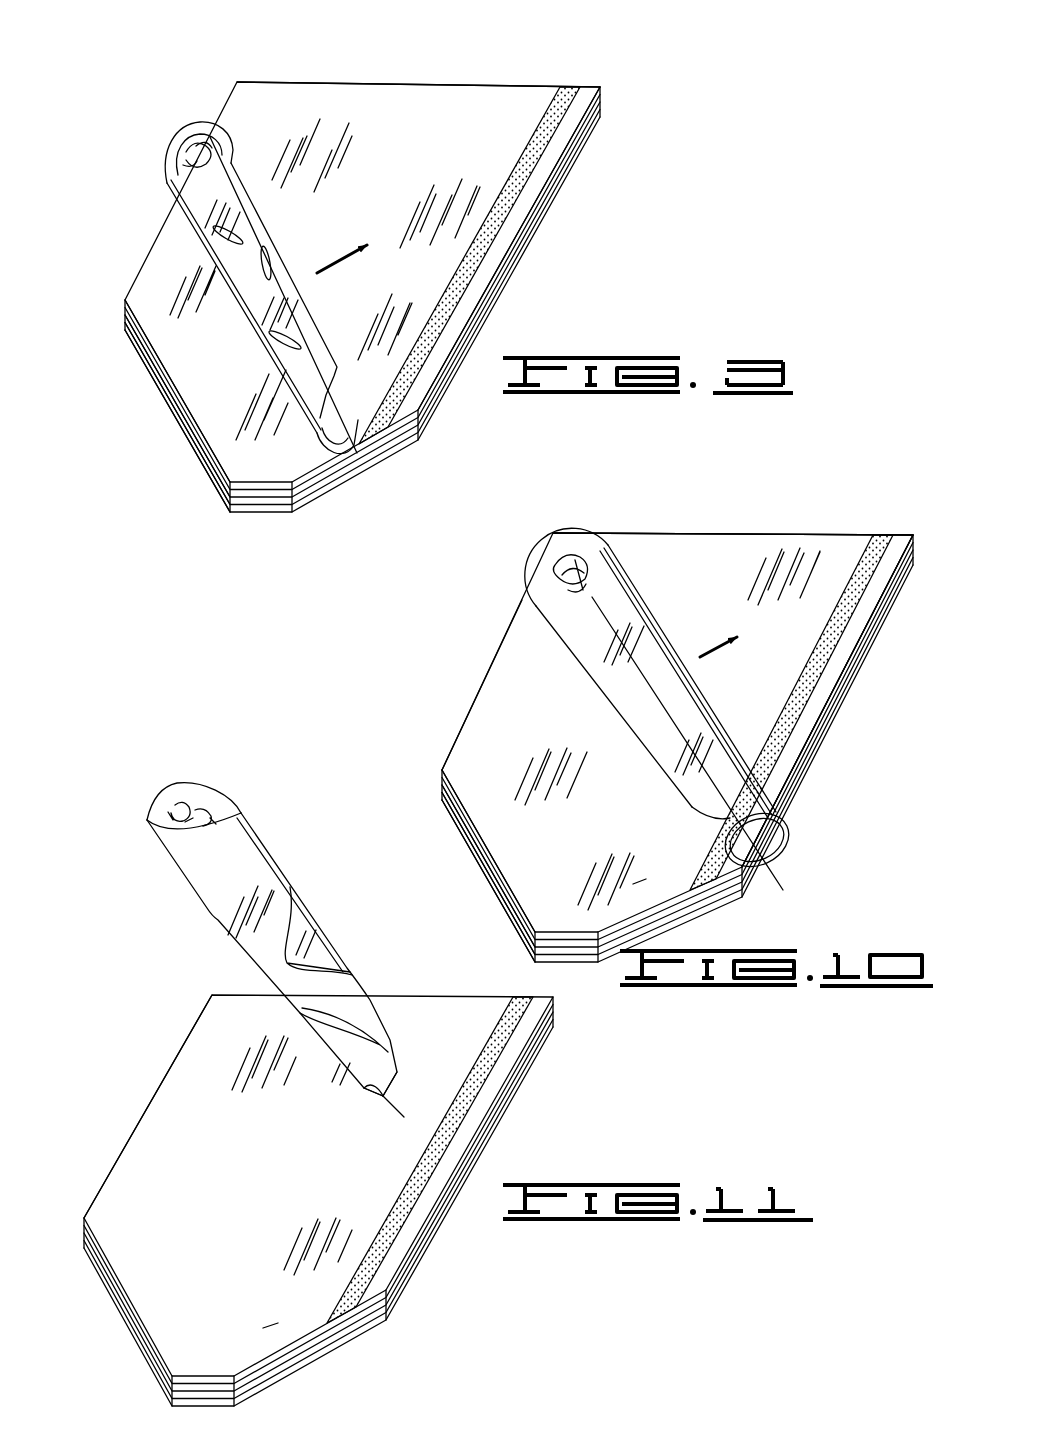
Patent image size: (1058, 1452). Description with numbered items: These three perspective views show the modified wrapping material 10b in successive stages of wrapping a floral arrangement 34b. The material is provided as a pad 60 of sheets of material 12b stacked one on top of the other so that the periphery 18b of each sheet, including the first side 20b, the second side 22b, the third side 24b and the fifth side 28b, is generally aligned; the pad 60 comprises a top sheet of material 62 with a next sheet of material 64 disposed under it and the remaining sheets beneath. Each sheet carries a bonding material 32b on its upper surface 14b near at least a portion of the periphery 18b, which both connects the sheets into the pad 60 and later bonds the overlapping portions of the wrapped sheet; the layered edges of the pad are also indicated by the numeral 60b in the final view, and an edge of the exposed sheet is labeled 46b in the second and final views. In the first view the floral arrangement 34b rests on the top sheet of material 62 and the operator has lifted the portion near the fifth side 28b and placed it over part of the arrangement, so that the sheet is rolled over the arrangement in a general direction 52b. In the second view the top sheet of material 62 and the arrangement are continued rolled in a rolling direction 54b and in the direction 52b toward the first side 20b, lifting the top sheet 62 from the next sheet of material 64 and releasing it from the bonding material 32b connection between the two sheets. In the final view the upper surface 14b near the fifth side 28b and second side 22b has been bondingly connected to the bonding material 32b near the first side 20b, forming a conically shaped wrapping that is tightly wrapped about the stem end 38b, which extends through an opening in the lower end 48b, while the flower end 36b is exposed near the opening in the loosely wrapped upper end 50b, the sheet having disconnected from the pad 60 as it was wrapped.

In FIG. 10, the material 10b is at (735, 520).
In FIG. 11, the material 10b is at (237, 787).
In FIG. 9, the sheet of material 12b is at (512, 82).
In FIG. 10, the sheet of material 12b is at (840, 530).
In FIG. 11, the sheet of material 12b is at (233, 992).
In FIG. 9, the upper surface 14b is at (290, 100).
In FIG. 10, the upper surface 14b is at (623, 553).
In FIG. 9, the periphery 18b is at (157, 365).
In FIG. 10, the periphery 18b is at (457, 823).
In FIG. 9, the first side 20b is at (480, 303).
In FIG. 10, the first side 20b is at (837, 697).
In FIG. 9, the second side 22b is at (227, 97).
In FIG. 10, the second side 22b is at (550, 540).
In FIG. 9, the third side 24b is at (397, 75).
In FIG. 10, the third side 24b is at (643, 532).
In FIG. 9, the fifth side 28b is at (170, 403).
In FIG. 10, the fifth side 28b is at (480, 863).
In FIG. 9, the bonding material 32b is at (507, 200).
In FIG. 10, the bonding material 32b is at (813, 667).
In FIG. 11, the bonding material 32b is at (485, 1070).
In FIG. 11, the floral arrangement 34b is at (175, 780).
In FIG. 11, the flower end 36b is at (197, 820).
In FIG. 9, the stem end 38b is at (363, 420).
In FIG. 10, the stem end 38b is at (767, 882).
In FIG. 11, the stem end 38b is at (397, 1099).
In FIG. 10, the side edge of panel 46b is at (543, 684).
In FIG. 11, the side edge of panel 46b is at (177, 1155).
In FIG. 11, the lower end 48b is at (383, 1095).
In FIG. 11, the upper end 50b is at (187, 793).
In FIG. 9, the general direction 52b is at (347, 252).
In FIG. 10, the general direction 52b is at (713, 653).
In FIG. 9, the rolling direction 54b is at (260, 253).
In FIG. 10, the rolling direction 54b is at (678, 686).
In FIG. 9, the pad 60 is at (520, 253).
In FIG. 10, the pad 60 is at (793, 737).
In FIG. 11, the layered edge 60b is at (405, 1273).
In FIG. 9, the top sheet of material 62 is at (427, 117).
In FIG. 10, the top sheet of material 62 is at (750, 563).
In FIG. 11, the top sheet of material 62 is at (213, 1037).
In FIG. 9, the next sheet of material 64 is at (173, 247).
In FIG. 10, the next sheet of material 64 is at (503, 700).